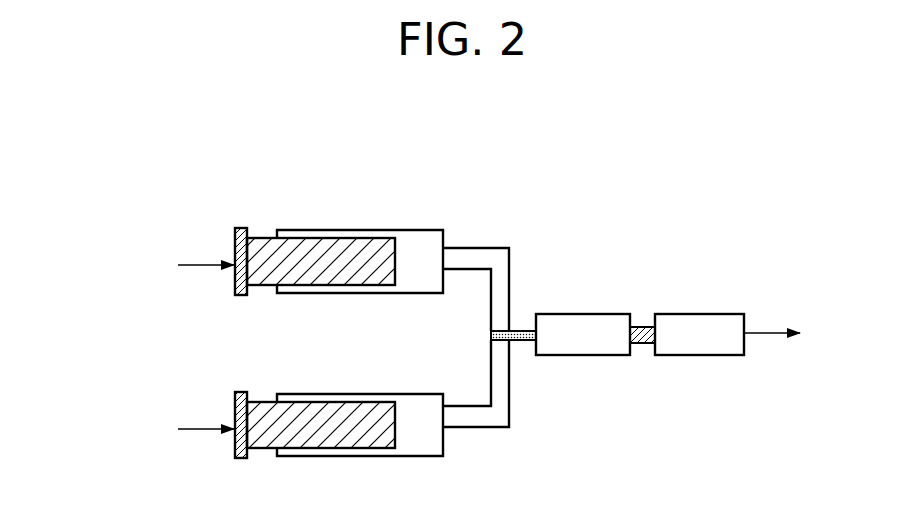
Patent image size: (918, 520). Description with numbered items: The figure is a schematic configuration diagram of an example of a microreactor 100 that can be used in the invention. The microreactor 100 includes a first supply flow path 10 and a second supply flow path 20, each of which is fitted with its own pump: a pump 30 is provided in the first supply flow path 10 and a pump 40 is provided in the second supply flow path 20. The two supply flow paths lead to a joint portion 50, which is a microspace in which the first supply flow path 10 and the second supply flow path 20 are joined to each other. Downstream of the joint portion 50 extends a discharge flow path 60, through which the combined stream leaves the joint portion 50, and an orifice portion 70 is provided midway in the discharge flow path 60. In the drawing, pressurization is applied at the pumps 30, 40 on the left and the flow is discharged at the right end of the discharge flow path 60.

The microreactor 100 is at (222, 201).
The first supply flow path 10 is at (480, 247).
The second supply flow path 20 is at (490, 430).
The pump 30 is at (352, 245).
The pump 40 is at (345, 445).
The joint portion 50 is at (528, 345).
The discharge flow path 60 is at (595, 357).
The orifice portion 70 is at (645, 345).